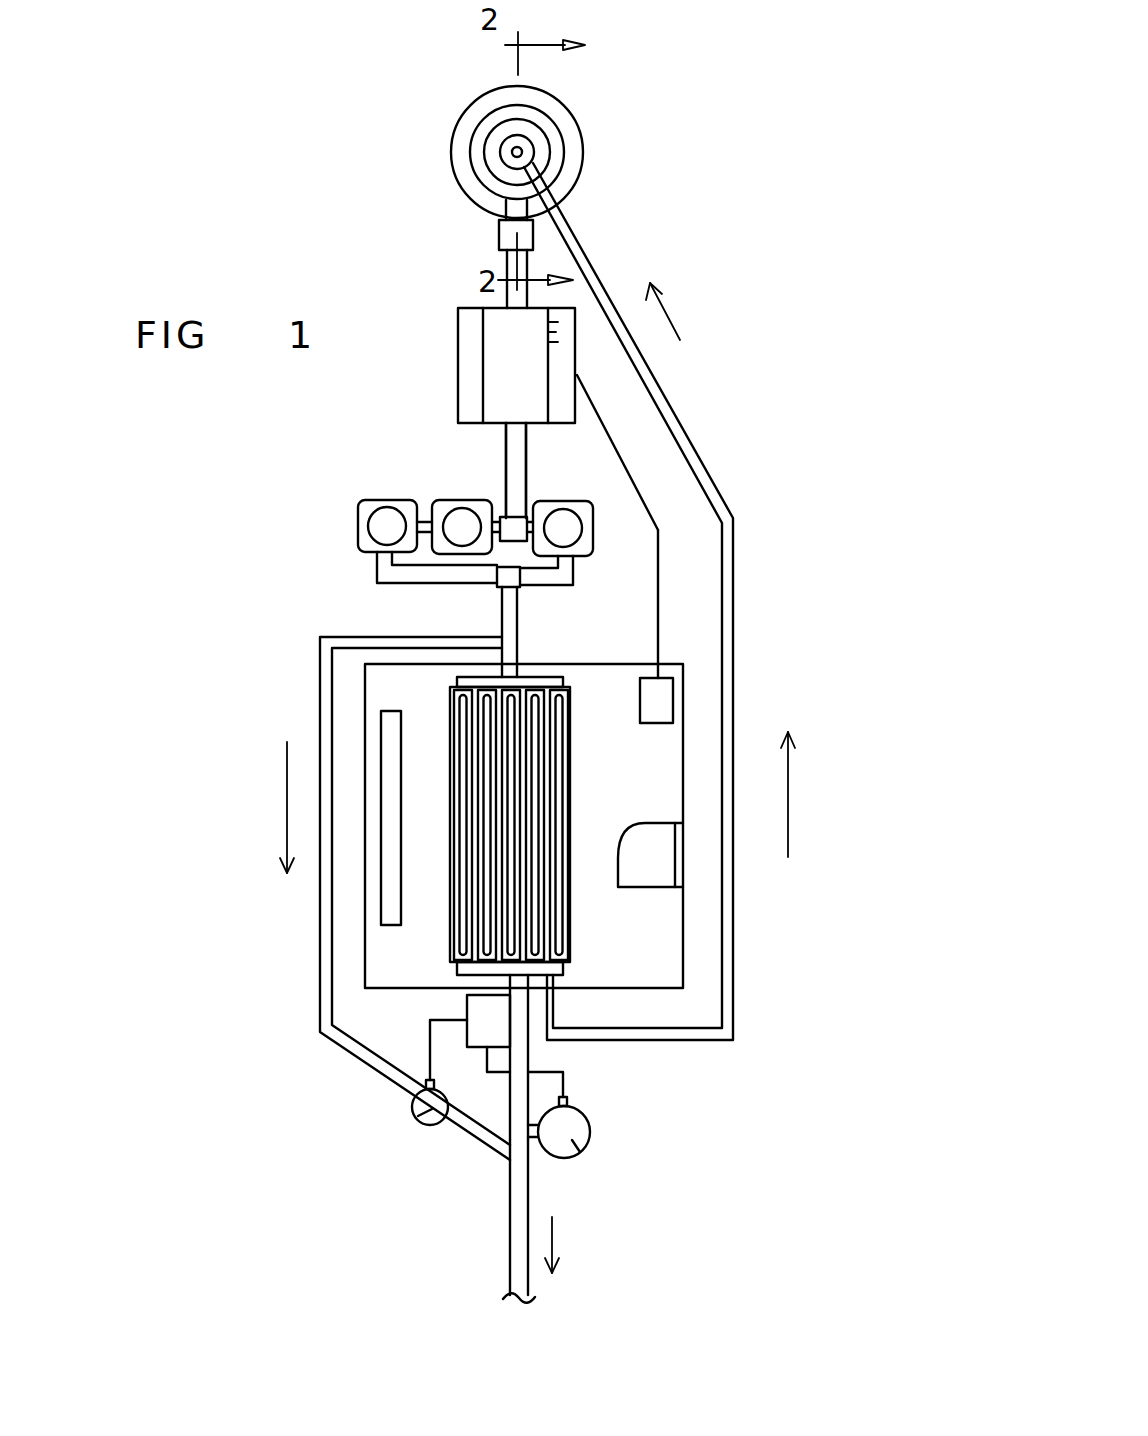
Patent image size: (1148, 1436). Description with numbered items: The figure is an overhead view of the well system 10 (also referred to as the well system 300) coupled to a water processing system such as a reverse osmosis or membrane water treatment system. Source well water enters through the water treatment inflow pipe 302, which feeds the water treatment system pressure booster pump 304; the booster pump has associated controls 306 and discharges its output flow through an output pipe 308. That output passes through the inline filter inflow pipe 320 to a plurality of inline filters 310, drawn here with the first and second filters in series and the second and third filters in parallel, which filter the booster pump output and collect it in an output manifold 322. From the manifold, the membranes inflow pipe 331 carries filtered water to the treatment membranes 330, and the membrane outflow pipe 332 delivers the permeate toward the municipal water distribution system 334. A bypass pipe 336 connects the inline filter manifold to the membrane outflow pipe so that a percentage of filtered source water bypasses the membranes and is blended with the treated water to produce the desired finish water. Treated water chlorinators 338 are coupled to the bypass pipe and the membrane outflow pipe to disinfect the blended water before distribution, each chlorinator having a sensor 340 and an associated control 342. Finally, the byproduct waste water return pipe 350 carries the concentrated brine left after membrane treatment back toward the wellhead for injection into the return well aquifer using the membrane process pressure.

The well system 10 is at (630, 142).
The well system 300 is at (450, 427).
The water treatment inflow pipe 302 is at (499, 238).
The water treatment system pressure booster pump 304 is at (500, 375).
The controls 306 is at (558, 330).
The output pipe 308 is at (520, 460).
The inline filters 310 is at (370, 497).
The inline filter inflow pipe 320 is at (510, 530).
The output manifold 322 is at (538, 583).
The treatment membranes 330 is at (573, 792).
The membranes inflow pipe 331 is at (508, 622).
The membrane outflow pipe 332 is at (523, 1038).
The municipal water distribution system 334 is at (518, 1242).
The bypass pipe 336 is at (322, 702).
The treated water chlorinators 338 is at (432, 1112).
The sensor 340 is at (427, 1078).
The control 342 is at (482, 1008).
The byproduct waste water return pipe 350 is at (702, 1035).